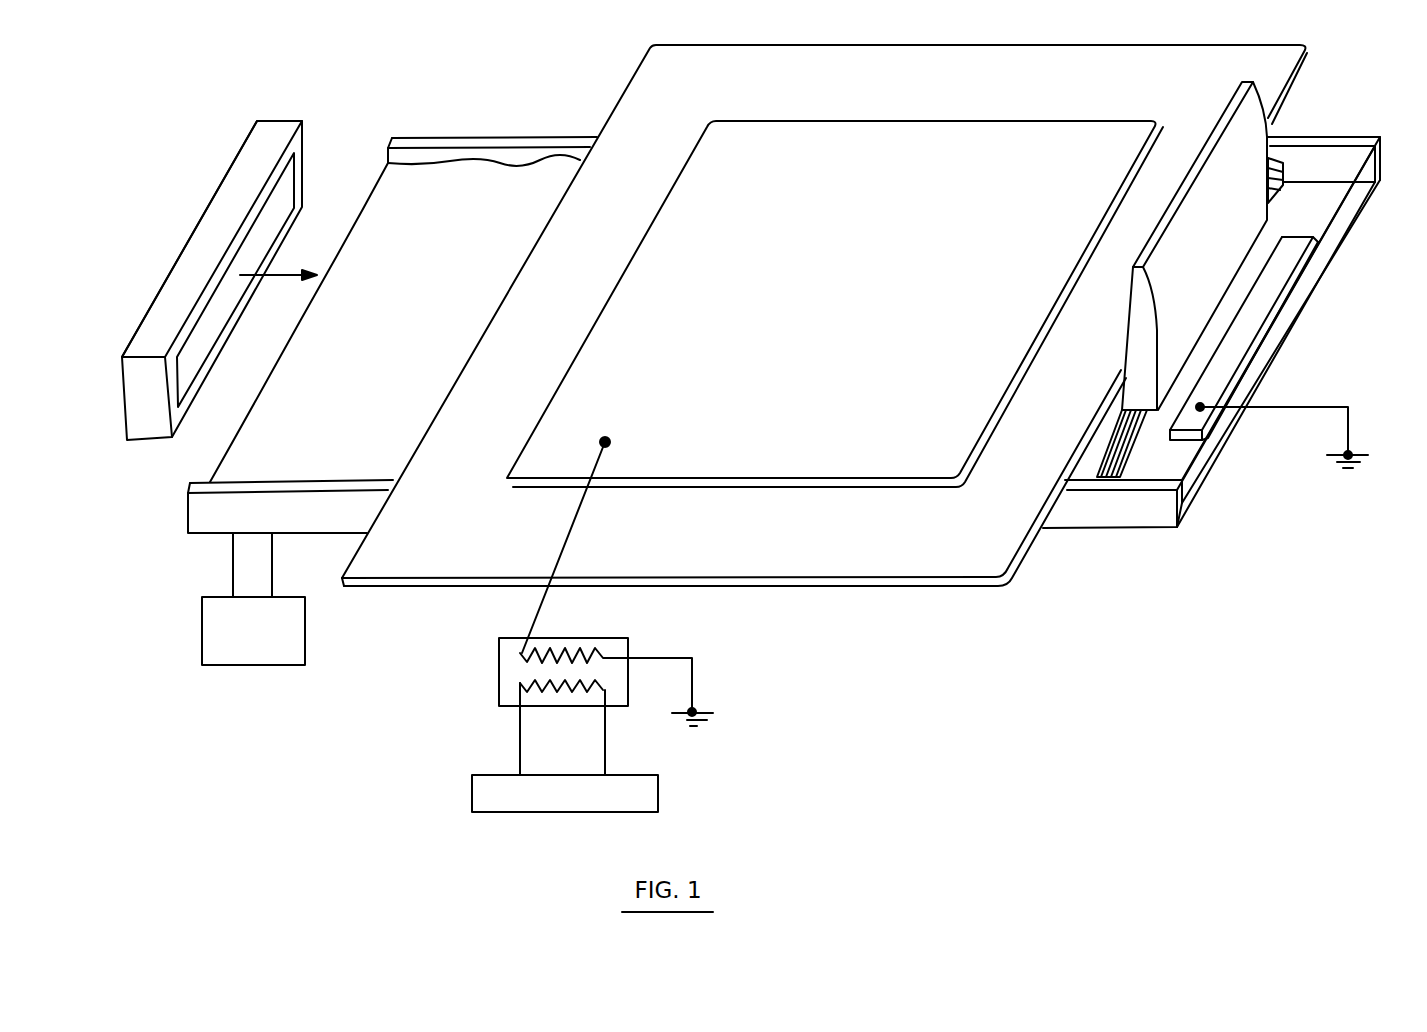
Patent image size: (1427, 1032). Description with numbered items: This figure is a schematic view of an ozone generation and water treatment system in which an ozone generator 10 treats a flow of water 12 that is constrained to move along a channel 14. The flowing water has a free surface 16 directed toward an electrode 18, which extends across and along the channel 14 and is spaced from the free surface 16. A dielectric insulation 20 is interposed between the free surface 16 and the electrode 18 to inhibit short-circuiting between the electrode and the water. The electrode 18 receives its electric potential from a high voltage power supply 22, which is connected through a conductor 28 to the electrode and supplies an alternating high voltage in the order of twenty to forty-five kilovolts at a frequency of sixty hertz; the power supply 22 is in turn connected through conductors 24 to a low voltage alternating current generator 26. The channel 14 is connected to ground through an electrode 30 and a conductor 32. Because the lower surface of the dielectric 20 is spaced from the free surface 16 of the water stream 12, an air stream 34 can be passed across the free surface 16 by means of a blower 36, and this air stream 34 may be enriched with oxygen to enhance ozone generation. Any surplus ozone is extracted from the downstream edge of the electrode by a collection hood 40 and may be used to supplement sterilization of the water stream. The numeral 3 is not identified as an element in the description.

The ozone generator 10 is at (526, 114).
The flow of water 12 is at (403, 309).
The blower 36 is at (243, 173).
The air stream 34 is at (273, 277).
The support platform 3 is at (265, 648).
The dielectric insulation 20 is at (913, 560).
The electrode 18 is at (802, 467).
The conductor 28 is at (533, 602).
The high voltage power supply 22 is at (518, 668).
The conductors 24 is at (520, 742).
The low voltage alternating current generator 26 is at (492, 792).
The collection hood 40 is at (1228, 105).
The free surface 16 is at (1270, 130).
The channel 14 is at (1083, 512).
The electrode 30 is at (1257, 306).
The conductor 32 is at (1348, 430).